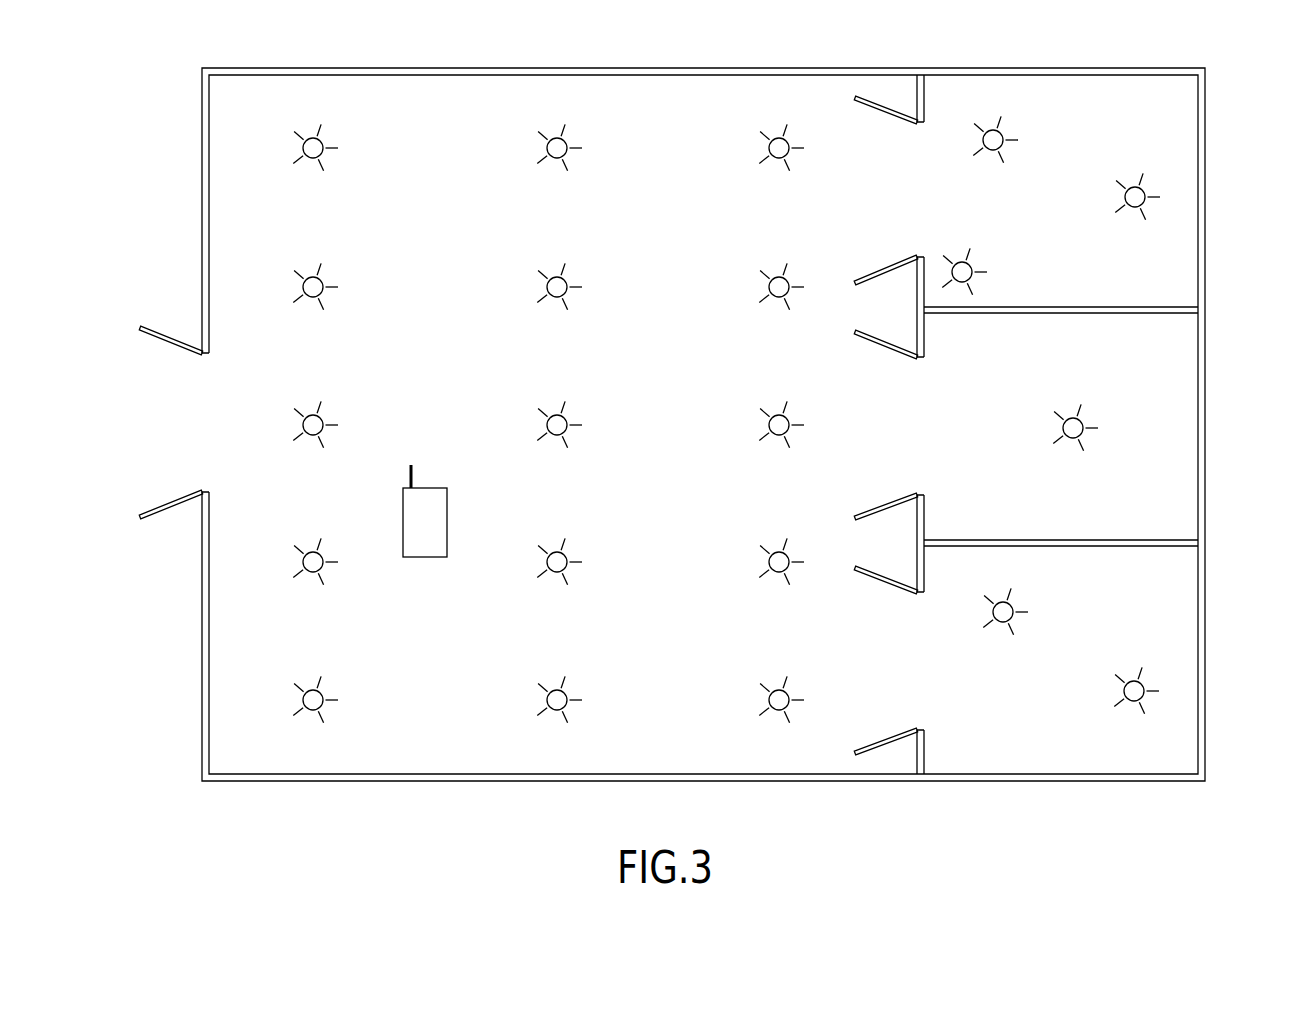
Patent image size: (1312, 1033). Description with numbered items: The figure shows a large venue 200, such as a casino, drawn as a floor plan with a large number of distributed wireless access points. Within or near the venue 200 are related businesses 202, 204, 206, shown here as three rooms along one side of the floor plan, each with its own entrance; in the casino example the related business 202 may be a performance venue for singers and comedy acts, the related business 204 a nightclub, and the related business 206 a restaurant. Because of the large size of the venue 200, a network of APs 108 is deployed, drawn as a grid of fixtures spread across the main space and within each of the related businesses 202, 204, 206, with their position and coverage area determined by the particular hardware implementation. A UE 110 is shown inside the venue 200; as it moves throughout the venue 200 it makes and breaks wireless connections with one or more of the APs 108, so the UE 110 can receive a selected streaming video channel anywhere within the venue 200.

The wireless access point (AP) 108 is at (325, 160).
The user equipment (UE) 110 is at (420, 558).
The venue 200 is at (397, 781).
The related business (performance venue) 202 is at (1206, 185).
The related business (nightclub) 204 is at (1206, 413).
The related business (restaurant) 206 is at (1206, 612).